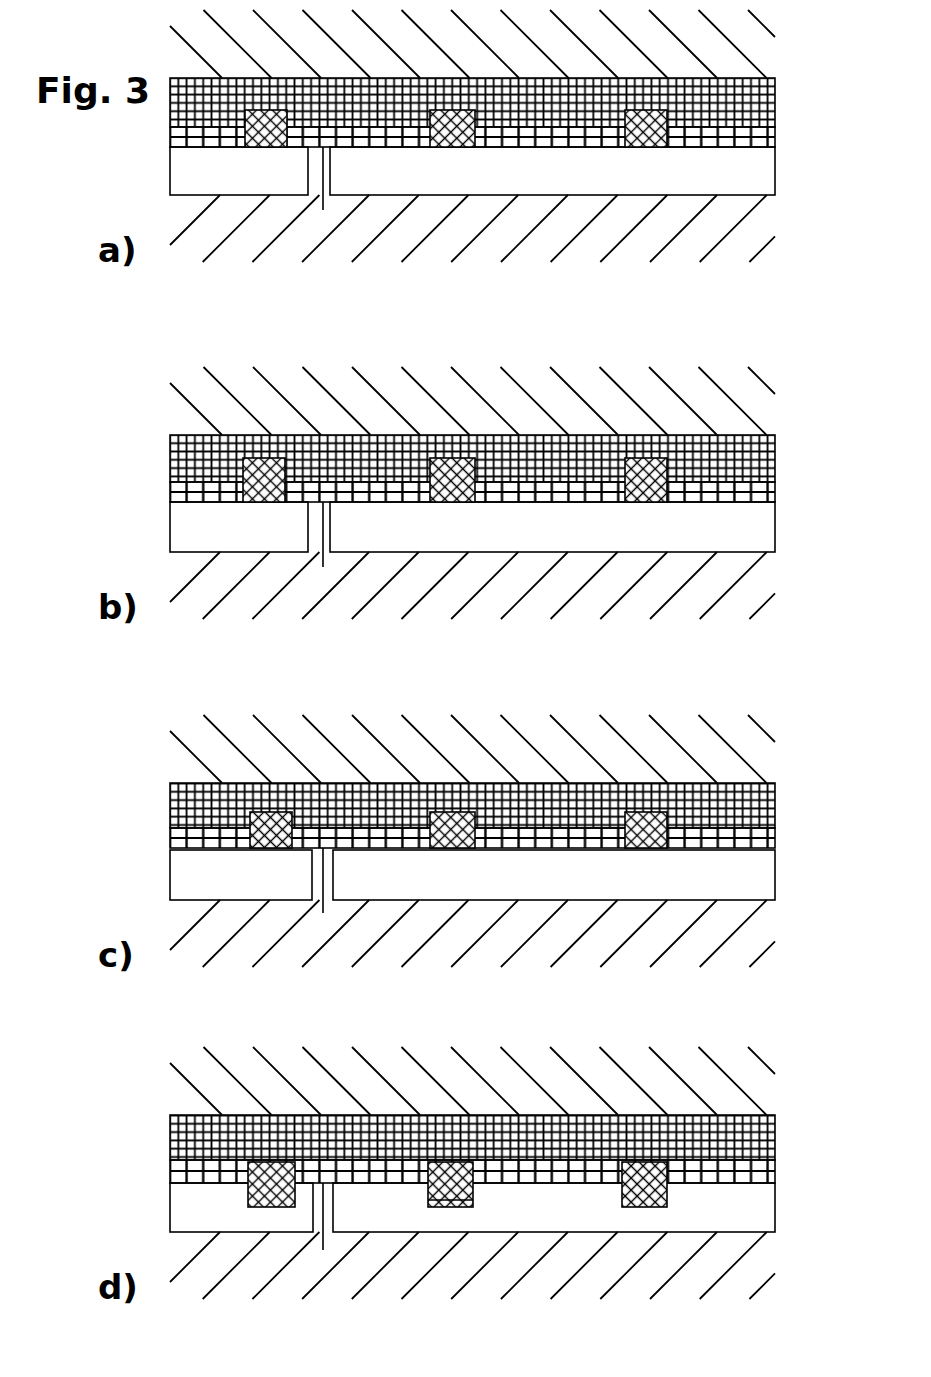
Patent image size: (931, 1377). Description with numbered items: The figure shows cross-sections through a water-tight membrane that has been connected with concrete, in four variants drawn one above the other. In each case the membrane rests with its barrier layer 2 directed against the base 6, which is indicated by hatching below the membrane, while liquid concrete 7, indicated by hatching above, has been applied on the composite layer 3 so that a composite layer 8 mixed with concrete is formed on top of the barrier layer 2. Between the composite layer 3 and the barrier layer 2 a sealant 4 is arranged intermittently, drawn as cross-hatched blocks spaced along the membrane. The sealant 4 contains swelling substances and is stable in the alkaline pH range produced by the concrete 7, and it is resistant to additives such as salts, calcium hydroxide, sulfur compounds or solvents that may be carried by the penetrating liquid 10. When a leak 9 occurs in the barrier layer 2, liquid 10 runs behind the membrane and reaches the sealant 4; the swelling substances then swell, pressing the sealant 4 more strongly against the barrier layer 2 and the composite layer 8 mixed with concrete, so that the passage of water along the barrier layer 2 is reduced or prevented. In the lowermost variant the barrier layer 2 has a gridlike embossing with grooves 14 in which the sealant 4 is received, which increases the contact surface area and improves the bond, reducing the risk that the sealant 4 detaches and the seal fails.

The barrier layer 2 is at (808, 1209).
The composite layer 3 is at (808, 1173).
The sealant 4 is at (618, 1303).
The base 6 is at (808, 1276).
The concrete 7 is at (808, 1070).
The composite layer mixed with concrete 8 is at (812, 1105).
The leak 9 is at (285, 1303).
The penetrating liquid 10 is at (353, 1303).
The grooves 14 is at (443, 1207).